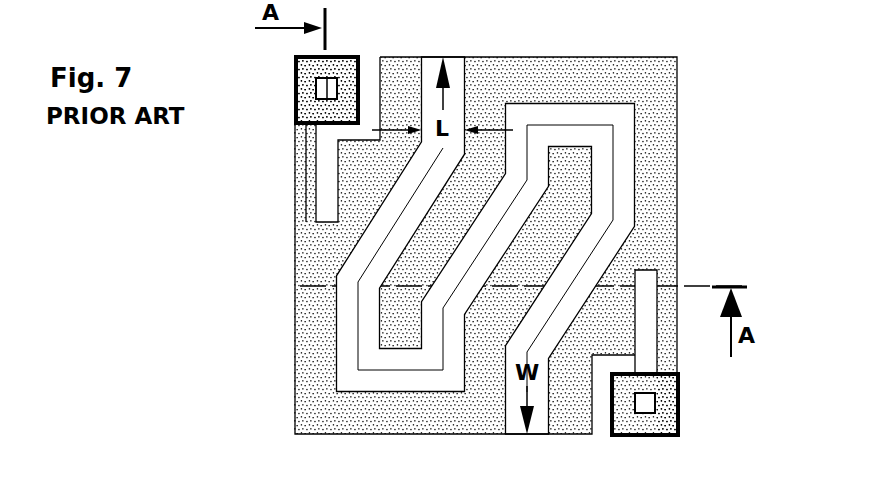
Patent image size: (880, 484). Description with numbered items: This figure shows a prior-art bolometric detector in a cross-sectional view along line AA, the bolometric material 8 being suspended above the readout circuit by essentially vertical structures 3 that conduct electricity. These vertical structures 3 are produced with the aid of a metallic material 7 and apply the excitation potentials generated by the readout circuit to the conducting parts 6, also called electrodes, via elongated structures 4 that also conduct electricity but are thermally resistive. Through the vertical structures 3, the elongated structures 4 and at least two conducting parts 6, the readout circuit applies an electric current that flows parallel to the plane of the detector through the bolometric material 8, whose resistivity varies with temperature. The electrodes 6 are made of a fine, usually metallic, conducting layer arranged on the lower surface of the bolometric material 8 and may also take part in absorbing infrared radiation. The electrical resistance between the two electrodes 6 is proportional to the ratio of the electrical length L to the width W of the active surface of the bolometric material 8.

The vertical structure 3 is at (650, 426).
The elongated structure 4 is at (298, 175).
The conducting part 6 is at (513, 285).
The metallic material 7 is at (290, 78).
The bolometric material 8 is at (633, 136).